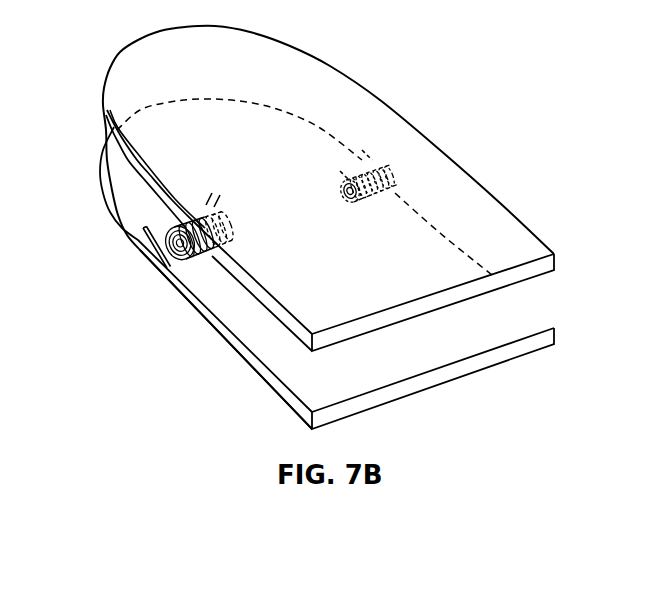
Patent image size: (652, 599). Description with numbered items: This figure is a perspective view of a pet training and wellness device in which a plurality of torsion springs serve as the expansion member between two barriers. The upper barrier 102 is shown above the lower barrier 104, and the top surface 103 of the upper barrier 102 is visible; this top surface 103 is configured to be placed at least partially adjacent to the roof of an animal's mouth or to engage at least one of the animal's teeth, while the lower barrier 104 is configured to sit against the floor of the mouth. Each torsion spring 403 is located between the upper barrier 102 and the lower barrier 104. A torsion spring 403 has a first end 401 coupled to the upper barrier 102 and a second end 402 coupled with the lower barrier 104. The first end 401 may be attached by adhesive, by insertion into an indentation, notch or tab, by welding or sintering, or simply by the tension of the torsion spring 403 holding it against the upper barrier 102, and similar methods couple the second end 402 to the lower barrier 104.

The upper barrier 102 is at (556, 264).
The lower barrier 104 is at (556, 339).
The top surface 103 is at (269, 84).
The first end 401 is at (203, 201).
The second end 402 is at (144, 237).
The torsion spring 403 is at (166, 267).